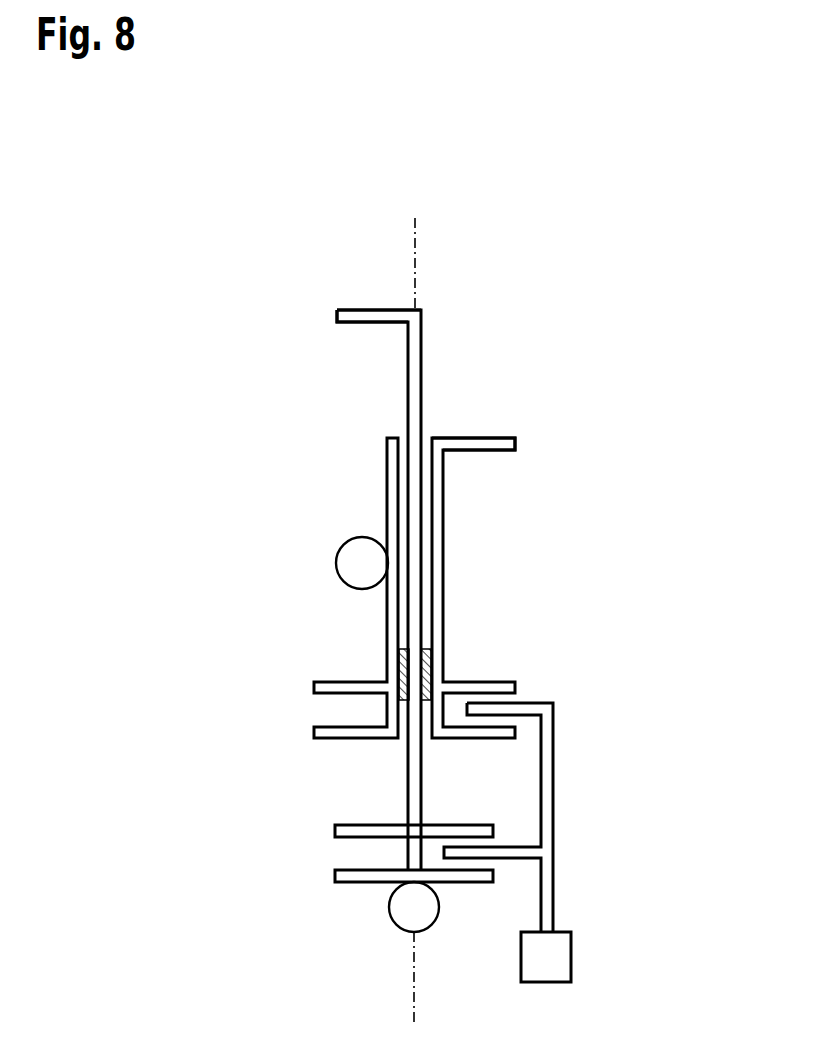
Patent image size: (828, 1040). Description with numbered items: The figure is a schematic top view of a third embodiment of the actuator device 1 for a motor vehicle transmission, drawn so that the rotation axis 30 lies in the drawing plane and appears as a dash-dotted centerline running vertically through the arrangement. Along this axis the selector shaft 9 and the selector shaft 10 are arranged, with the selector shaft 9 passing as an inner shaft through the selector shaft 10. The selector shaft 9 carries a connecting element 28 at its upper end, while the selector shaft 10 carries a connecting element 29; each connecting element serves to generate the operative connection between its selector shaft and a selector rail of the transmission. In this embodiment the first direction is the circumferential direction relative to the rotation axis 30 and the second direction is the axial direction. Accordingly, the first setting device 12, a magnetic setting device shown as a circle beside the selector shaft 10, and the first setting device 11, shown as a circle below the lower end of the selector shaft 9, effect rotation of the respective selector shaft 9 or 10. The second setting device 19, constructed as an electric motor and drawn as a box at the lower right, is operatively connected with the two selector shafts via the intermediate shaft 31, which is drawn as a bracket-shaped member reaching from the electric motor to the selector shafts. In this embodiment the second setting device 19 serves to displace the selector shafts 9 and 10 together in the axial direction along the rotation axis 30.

The actuator device 1 is at (661, 212).
The selector shaft 9 is at (412, 345).
The selector shaft 10 is at (435, 565).
The first setting device 11 is at (414, 907).
The first setting device 12 is at (362, 563).
The second setting device 19 is at (563, 955).
The connecting element 28 is at (388, 313).
The connecting element 29 is at (462, 444).
The rotation axis 30 is at (412, 975).
The intermediate shaft 31 is at (545, 787).